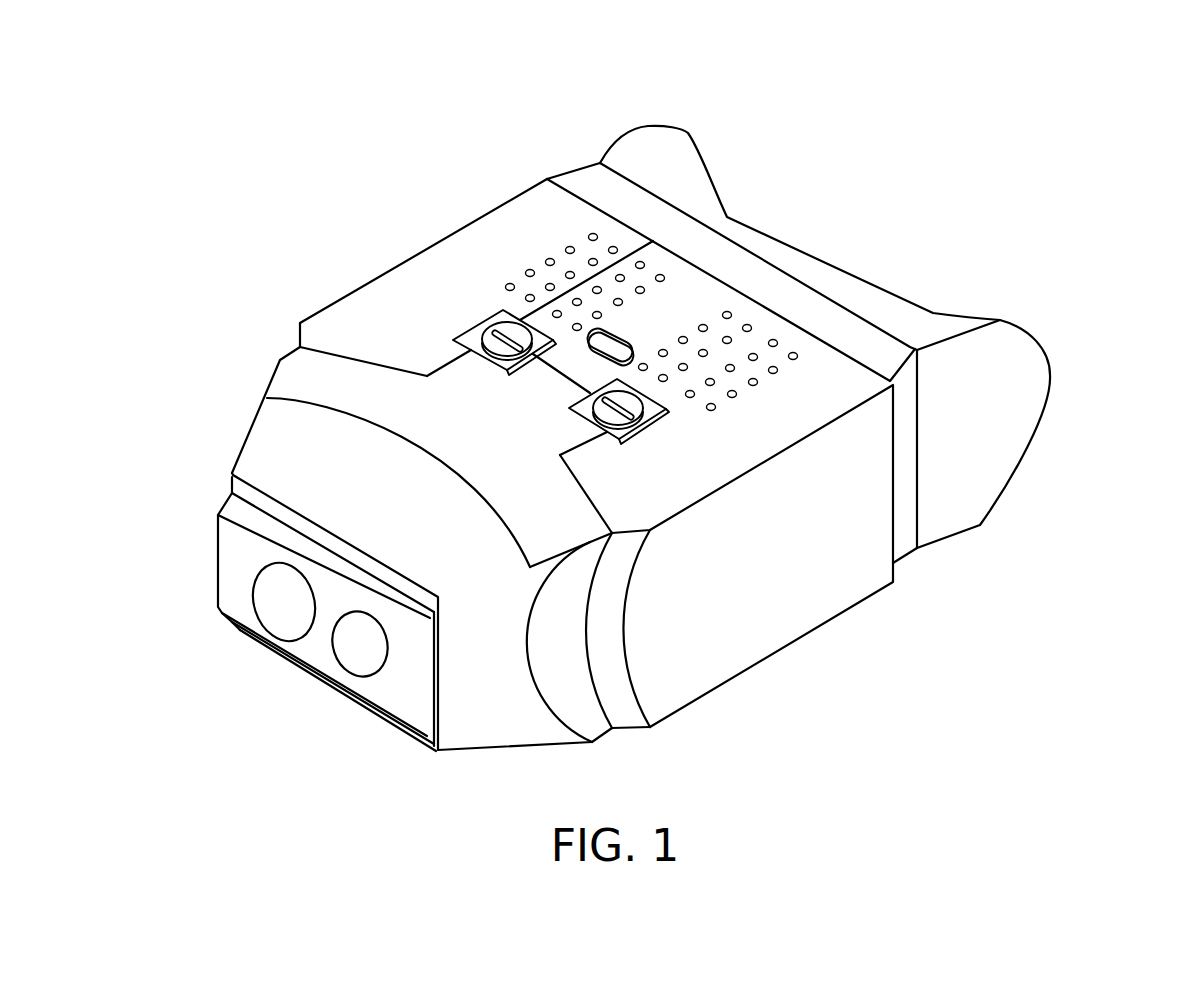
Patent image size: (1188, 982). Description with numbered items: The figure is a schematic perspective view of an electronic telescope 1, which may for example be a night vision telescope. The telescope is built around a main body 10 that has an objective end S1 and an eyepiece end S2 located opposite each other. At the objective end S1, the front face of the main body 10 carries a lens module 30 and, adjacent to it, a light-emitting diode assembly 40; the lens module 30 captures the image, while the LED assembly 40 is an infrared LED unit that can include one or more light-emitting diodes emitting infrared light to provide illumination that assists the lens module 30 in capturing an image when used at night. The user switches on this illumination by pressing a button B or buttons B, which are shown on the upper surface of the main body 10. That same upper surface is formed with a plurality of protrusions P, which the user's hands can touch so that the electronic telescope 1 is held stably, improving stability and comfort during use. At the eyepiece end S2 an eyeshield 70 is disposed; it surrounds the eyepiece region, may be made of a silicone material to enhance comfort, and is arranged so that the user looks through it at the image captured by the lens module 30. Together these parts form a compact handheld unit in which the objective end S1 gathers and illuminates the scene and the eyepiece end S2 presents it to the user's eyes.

The electronic telescope 1 is at (286, 88).
The main body 10 is at (695, 672).
The lens module 30 is at (287, 602).
The light-emitting diode assembly 40 is at (360, 642).
The eyeshield 70 is at (1023, 398).
The objective end S1 is at (292, 348).
The eyepiece end S2 is at (572, 166).
The protrusions P is at (548, 258).
The button B is at (613, 400).